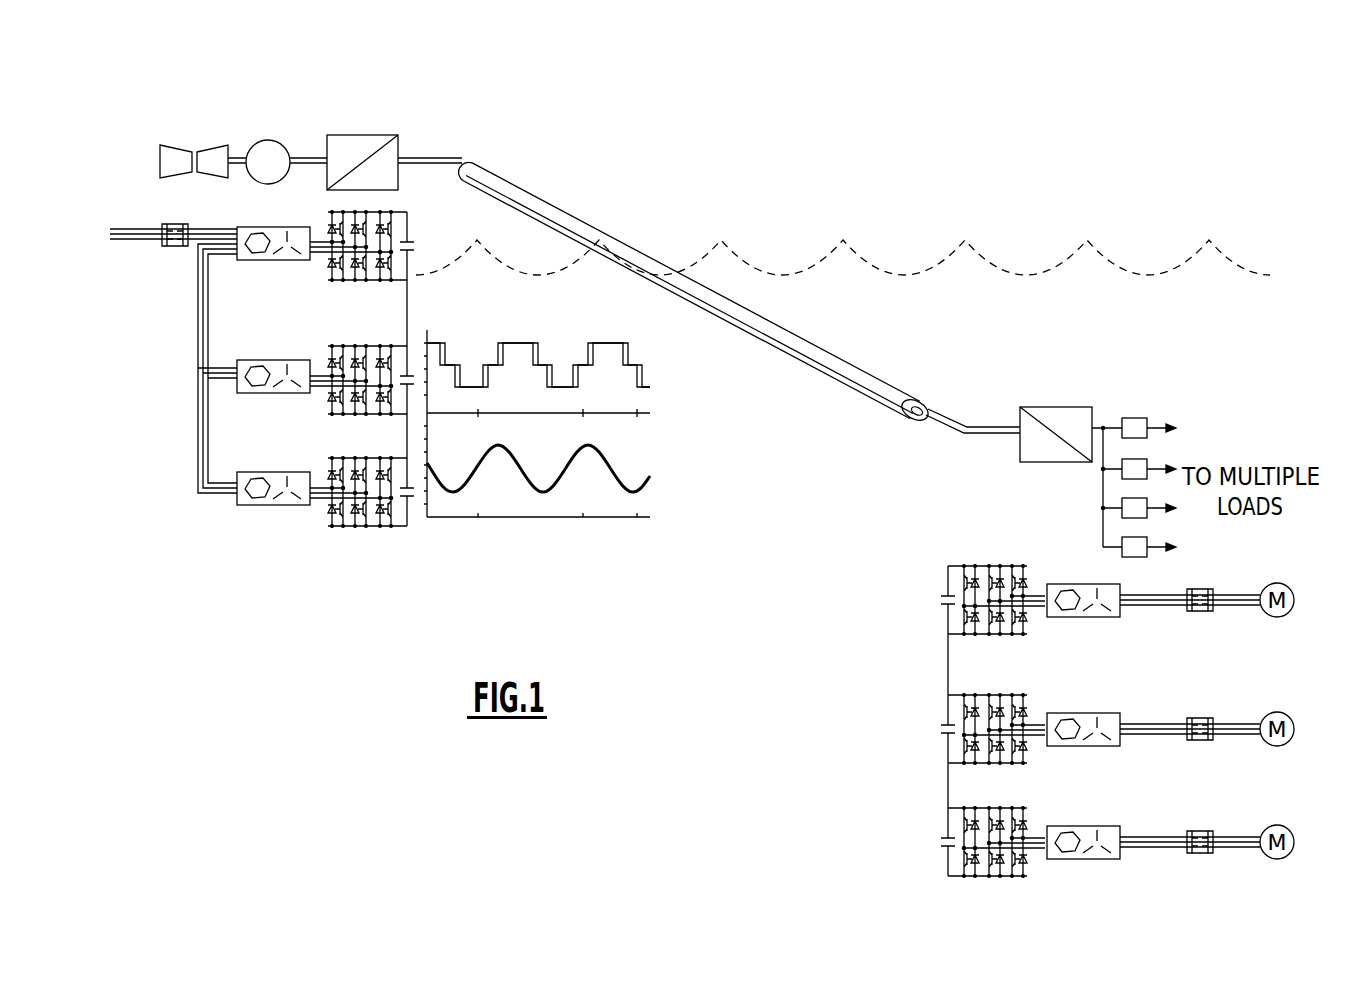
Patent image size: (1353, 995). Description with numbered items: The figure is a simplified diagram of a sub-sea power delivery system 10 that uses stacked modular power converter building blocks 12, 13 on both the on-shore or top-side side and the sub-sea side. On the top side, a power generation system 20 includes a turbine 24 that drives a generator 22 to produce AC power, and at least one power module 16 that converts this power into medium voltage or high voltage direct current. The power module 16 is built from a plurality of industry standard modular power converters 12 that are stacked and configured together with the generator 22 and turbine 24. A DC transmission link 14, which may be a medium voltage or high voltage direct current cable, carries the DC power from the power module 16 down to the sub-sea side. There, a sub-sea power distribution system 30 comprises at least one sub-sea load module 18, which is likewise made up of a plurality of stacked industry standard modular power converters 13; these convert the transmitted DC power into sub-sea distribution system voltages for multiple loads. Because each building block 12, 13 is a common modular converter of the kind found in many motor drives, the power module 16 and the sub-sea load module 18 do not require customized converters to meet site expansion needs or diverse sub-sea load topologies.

The sub-sea power delivery system 10 is at (1023, 115).
The modular power converter building block 12 is at (333, 288).
The modular power converter building block 13 is at (968, 562).
The DC transmission link 14 is at (772, 347).
The power module 16 is at (398, 148).
The sub-sea load module 18 is at (1020, 413).
The power generation system 20 is at (227, 95).
The generator 22 is at (256, 180).
The turbine 24 is at (160, 157).
The sub-sea power distribution system 30 is at (1122, 360).